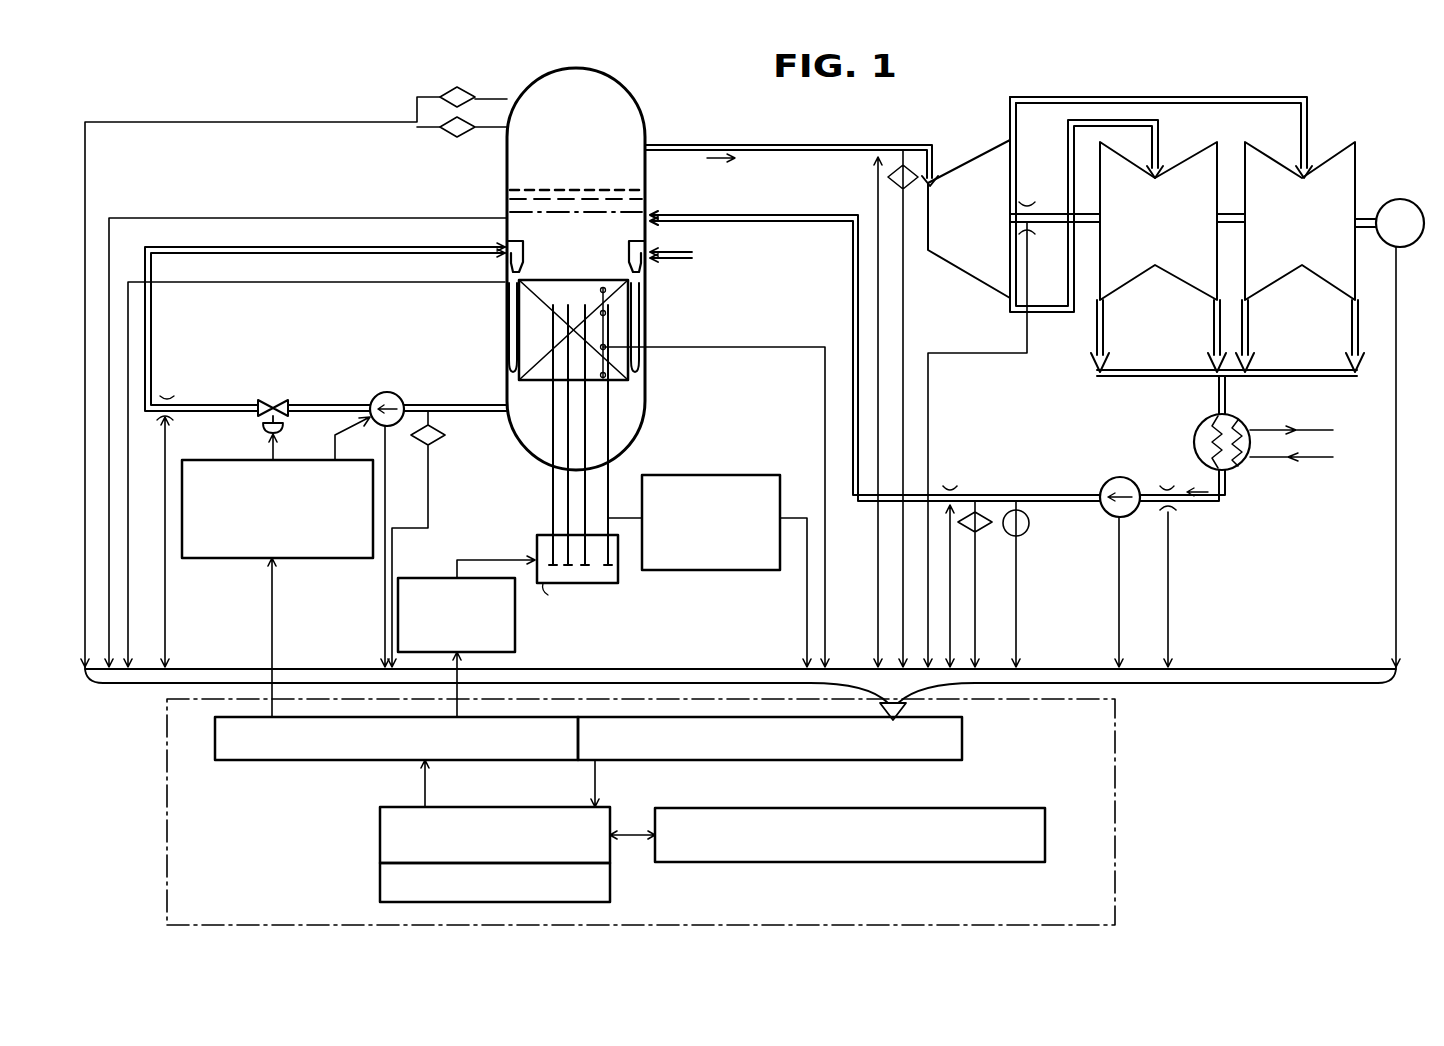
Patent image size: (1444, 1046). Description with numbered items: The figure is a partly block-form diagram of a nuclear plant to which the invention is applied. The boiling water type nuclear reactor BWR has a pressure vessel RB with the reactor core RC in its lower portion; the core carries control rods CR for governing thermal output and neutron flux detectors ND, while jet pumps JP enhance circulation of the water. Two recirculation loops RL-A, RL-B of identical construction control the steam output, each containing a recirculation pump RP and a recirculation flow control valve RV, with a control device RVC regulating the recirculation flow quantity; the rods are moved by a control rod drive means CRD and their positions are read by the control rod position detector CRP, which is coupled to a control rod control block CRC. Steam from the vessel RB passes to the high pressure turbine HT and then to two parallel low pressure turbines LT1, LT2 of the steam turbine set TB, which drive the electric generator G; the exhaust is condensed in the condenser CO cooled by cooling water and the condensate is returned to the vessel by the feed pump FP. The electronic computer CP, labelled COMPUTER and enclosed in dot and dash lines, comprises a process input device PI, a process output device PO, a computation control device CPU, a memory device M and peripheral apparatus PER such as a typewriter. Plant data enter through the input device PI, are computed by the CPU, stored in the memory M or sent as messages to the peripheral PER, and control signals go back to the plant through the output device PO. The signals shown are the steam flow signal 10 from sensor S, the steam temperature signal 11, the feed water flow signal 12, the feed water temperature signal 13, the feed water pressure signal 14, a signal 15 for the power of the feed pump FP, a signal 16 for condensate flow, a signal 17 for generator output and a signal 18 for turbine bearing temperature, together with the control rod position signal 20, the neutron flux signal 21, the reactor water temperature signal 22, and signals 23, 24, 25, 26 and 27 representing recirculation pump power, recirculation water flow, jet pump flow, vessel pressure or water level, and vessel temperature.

The boiling water type nuclear reactor BWR is at (575, 49).
The pressure vessel RB is at (645, 99).
The reactor core RC is at (573, 313).
The jet pump JP is at (505, 362).
The neutron flux detector ND is at (613, 303).
The control rod CR is at (610, 472).
The control rod drive means CRD is at (537, 556).
The control rod position detector CRP is at (740, 475).
The control rod control CRC is at (434, 578).
The recirculation loop RL-A is at (325, 331).
The recirculation loop RL-B is at (695, 269).
The recirculation flow control valve RV is at (275, 414).
The recirculation pump RP is at (397, 396).
The control device for recirculation flow quantity RVC is at (338, 545).
The sensor S is at (881, 144).
The high pressure turbine HT is at (1014, 219).
The steam turbine set TB is at (1161, 188).
The low pressure turbine LT1 is at (1168, 257).
The low pressure turbine LT2 is at (1306, 257).
The electric generator G is at (1400, 223).
The condenser CO is at (1227, 442).
The feed pump FP is at (929, 364).
The electronic computer CP is at (1116, 800).
The electronic computer COMPUTER is at (1116, 770).
The process output device PO is at (257, 760).
The process input device PI is at (948, 740).
The computation control device CPU is at (380, 832).
The memory device M is at (380, 882).
The peripheral apparatus PER is at (745, 862).
The steam flow signal 10 is at (877, 565).
The steam temperature signal 11 is at (902, 627).
The feed water flow signal 12 is at (951, 608).
The feed water temperature signal 13 is at (976, 653).
The feed water pressure signal 14 is at (1017, 622).
The feed water pump power signal 15 is at (1118, 628).
The condensate flow signal 16 is at (1169, 633).
The generator output signal 17 is at (1395, 633).
The turbine bearing temperature signal 18 is at (927, 650).
The control rod position signal 20 is at (806, 628).
The neutron flux signal 21 is at (826, 615).
The reactor water temperature signal 22 is at (428, 497).
The recirculation pump power signal 23 is at (385, 507).
The recirculation water flow signal 24 is at (167, 588).
The jet pump flow signal 25 is at (127, 635).
The reactor vessel pressure or water level signal 26 is at (108, 598).
The reactor vessel temperature signal 27 is at (86, 558).